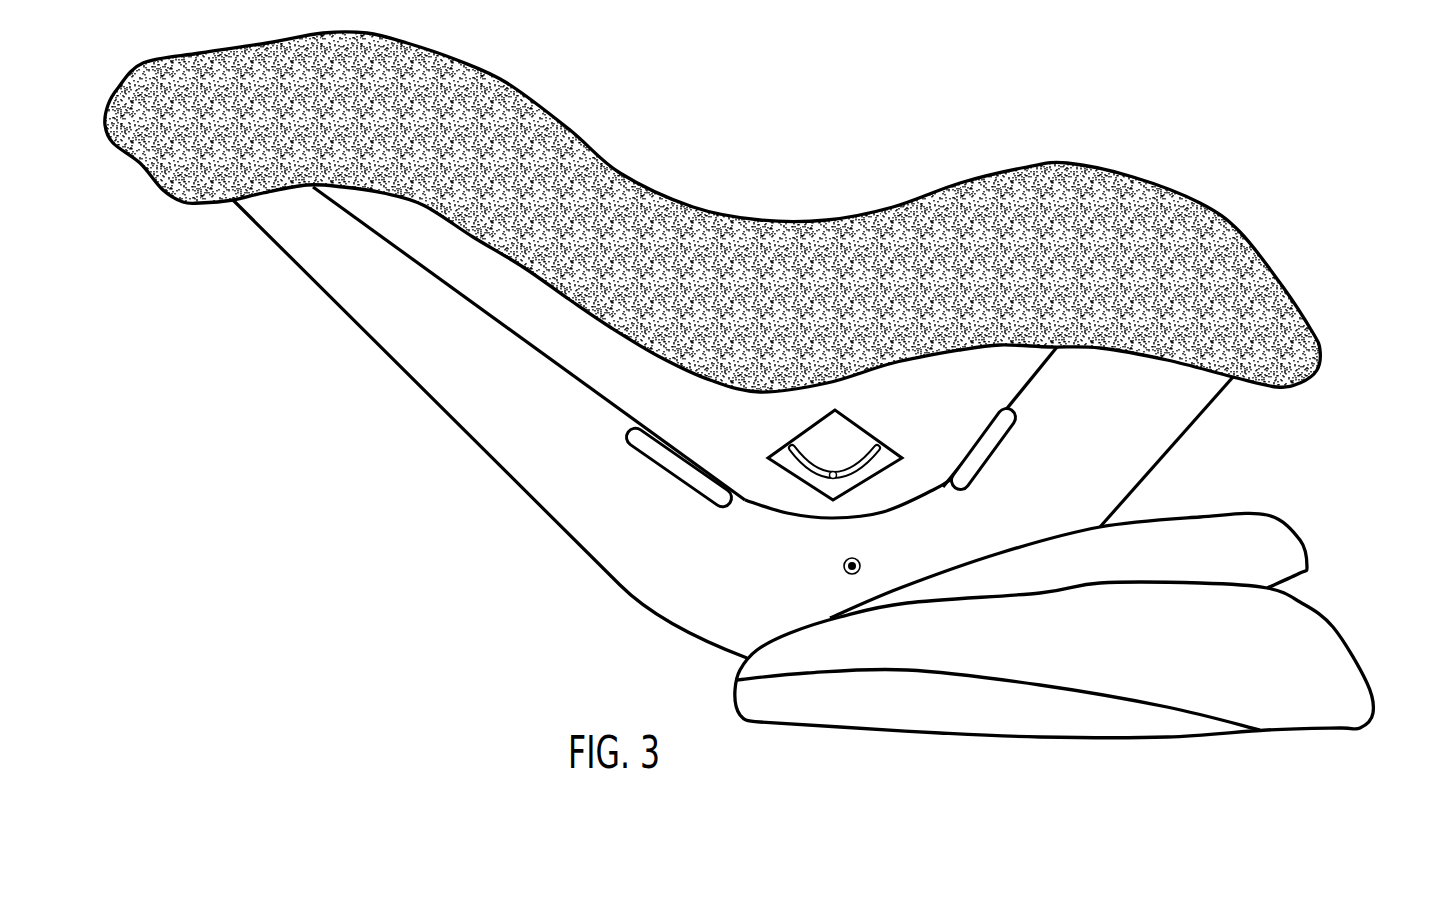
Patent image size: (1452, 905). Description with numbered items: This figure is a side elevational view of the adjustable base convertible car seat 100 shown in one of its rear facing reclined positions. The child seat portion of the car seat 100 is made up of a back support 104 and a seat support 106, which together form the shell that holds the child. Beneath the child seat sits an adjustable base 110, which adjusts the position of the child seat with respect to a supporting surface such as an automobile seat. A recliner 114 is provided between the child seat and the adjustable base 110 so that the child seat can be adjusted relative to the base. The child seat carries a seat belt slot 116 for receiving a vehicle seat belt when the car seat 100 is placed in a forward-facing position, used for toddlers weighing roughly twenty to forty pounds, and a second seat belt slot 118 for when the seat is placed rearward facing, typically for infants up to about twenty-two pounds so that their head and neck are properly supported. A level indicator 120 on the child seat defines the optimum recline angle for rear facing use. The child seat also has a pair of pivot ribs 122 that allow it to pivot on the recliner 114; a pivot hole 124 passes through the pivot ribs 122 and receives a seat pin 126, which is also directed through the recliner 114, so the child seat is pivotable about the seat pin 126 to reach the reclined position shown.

The adjustable base convertible car seat 100 is at (1112, 123).
The back support 104 is at (463, 297).
The seat support 106 is at (1022, 383).
The adjustable base 110 is at (1355, 648).
The recliner 114 is at (1298, 532).
The seat belt slot 116 is at (652, 464).
The seat belt slot 118 is at (990, 454).
The level indicator 120 is at (813, 493).
The pivot ribs 122 is at (1130, 497).
The pivot hole 124 is at (842, 577).
The seat pin 126 is at (842, 571).